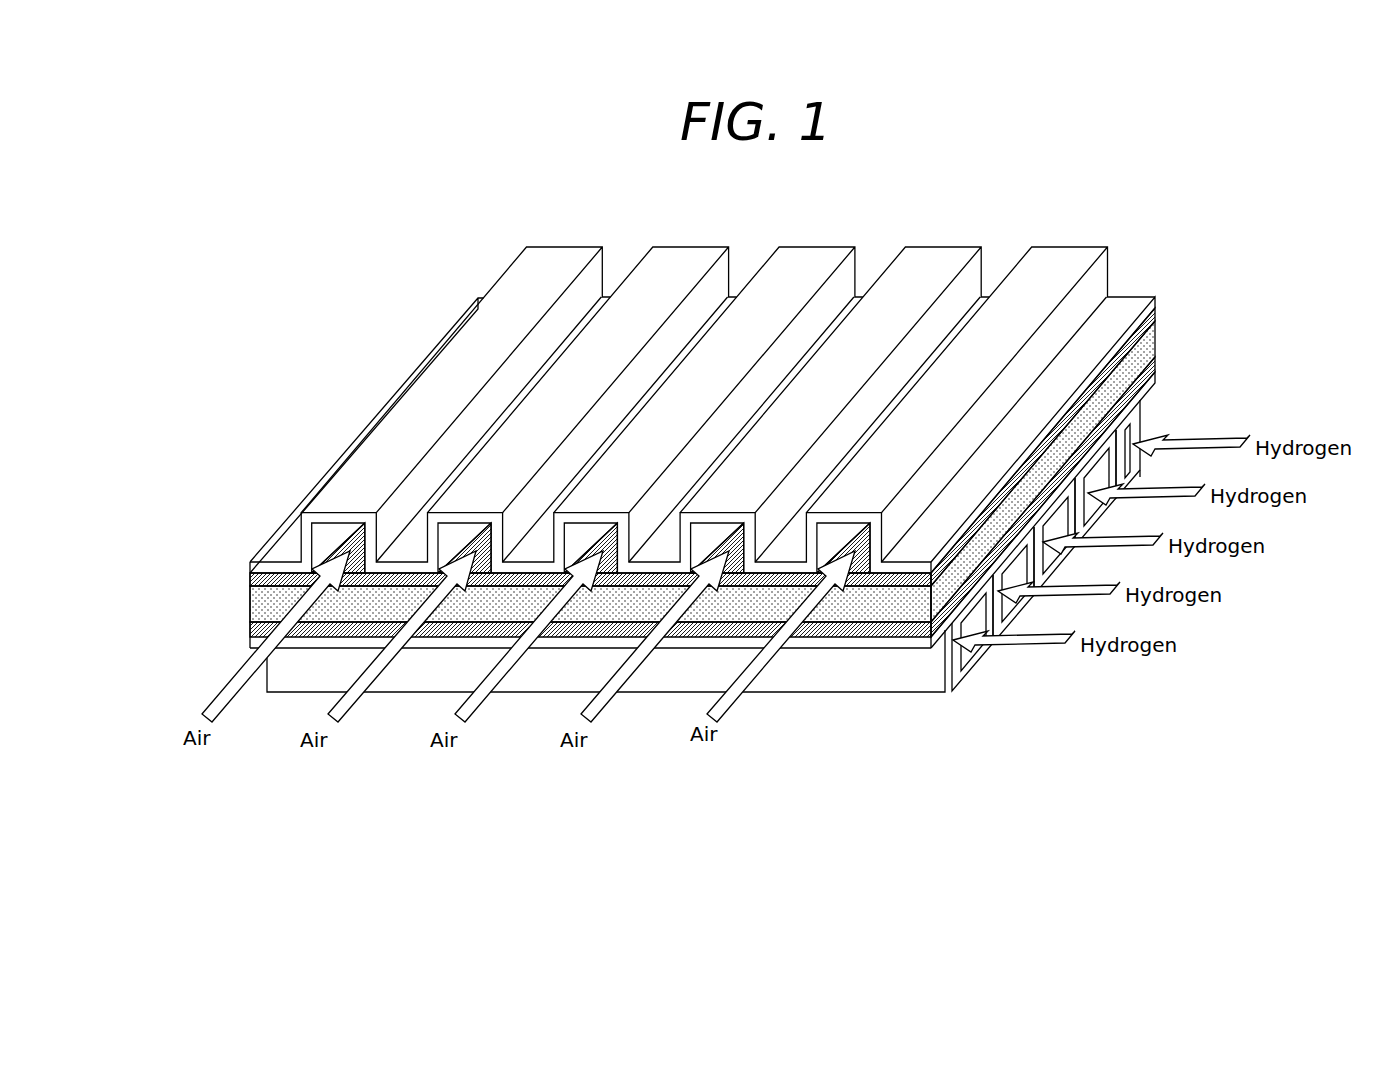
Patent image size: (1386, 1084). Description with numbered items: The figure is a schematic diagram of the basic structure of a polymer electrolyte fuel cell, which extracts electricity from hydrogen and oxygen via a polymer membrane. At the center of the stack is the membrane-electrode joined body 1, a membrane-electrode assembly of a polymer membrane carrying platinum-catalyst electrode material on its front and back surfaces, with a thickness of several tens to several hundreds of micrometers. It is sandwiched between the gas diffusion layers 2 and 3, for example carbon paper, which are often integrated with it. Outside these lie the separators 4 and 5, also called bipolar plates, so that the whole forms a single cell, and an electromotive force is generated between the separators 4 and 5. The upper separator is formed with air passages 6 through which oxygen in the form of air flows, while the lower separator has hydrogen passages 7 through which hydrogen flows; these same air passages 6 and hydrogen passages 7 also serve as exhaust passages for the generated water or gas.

The membrane-electrode joined body 1 is at (250, 604).
The gas diffusion layer 2 is at (250, 576).
The gas diffusion layer 3 is at (250, 630).
The separator 4 is at (378, 471).
The separator 5 is at (906, 668).
The air passage 6 is at (324, 539).
The hydrogen passage 7 is at (958, 658).